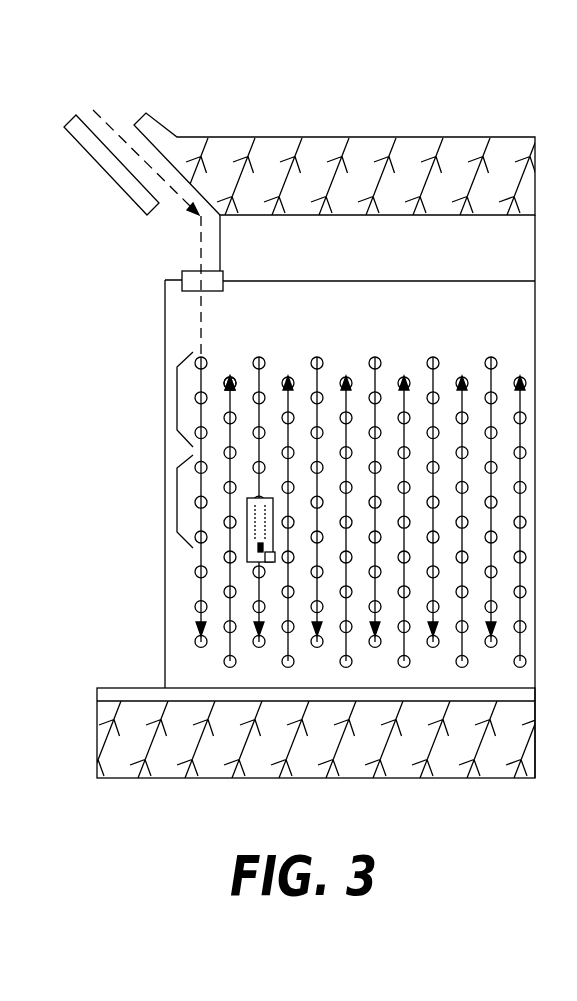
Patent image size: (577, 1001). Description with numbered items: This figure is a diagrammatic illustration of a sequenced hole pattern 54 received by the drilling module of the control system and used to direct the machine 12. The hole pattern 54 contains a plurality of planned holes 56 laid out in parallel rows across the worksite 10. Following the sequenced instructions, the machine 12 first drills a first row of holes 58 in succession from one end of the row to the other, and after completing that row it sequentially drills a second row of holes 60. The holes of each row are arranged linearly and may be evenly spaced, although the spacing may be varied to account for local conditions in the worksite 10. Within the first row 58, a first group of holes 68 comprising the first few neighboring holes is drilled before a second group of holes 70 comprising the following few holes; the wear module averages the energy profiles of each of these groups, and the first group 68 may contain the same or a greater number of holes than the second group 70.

The worksite 10 is at (419, 78).
The machine 12 is at (247, 507).
The hole pattern 54 is at (311, 334).
The planned holes 56 is at (377, 360).
The first row of holes 58 is at (186, 338).
The second row of holes 60 is at (236, 352).
The first group of holes 68 is at (177, 393).
The second group of holes 70 is at (177, 496).